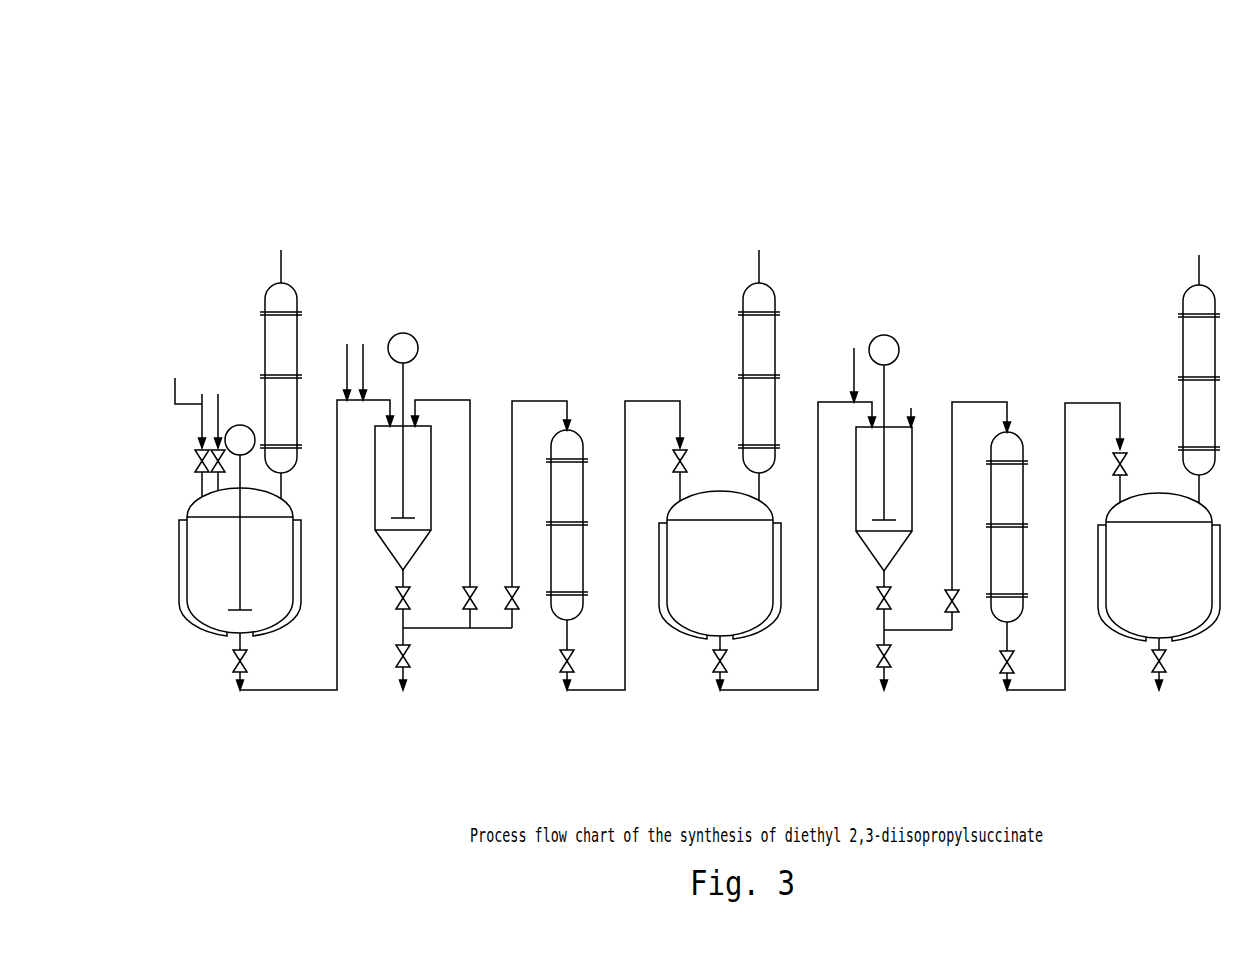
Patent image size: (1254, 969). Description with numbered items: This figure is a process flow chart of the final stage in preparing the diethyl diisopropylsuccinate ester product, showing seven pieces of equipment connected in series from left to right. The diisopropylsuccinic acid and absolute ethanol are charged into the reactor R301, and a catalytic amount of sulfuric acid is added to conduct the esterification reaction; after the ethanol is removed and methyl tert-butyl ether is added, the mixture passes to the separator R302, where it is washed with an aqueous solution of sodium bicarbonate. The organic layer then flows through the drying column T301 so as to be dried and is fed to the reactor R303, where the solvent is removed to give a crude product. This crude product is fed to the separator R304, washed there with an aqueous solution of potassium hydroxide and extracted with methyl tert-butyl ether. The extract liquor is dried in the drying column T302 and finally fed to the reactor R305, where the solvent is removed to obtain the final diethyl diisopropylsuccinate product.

The reactor R301 is at (265, 749).
The separator R302 is at (437, 749).
The drying column T301 is at (597, 749).
The reactor R303 is at (757, 749).
The separator R304 is at (917, 749).
The drying column T302 is at (1037, 749).
The reactor R305 is at (1190, 749).